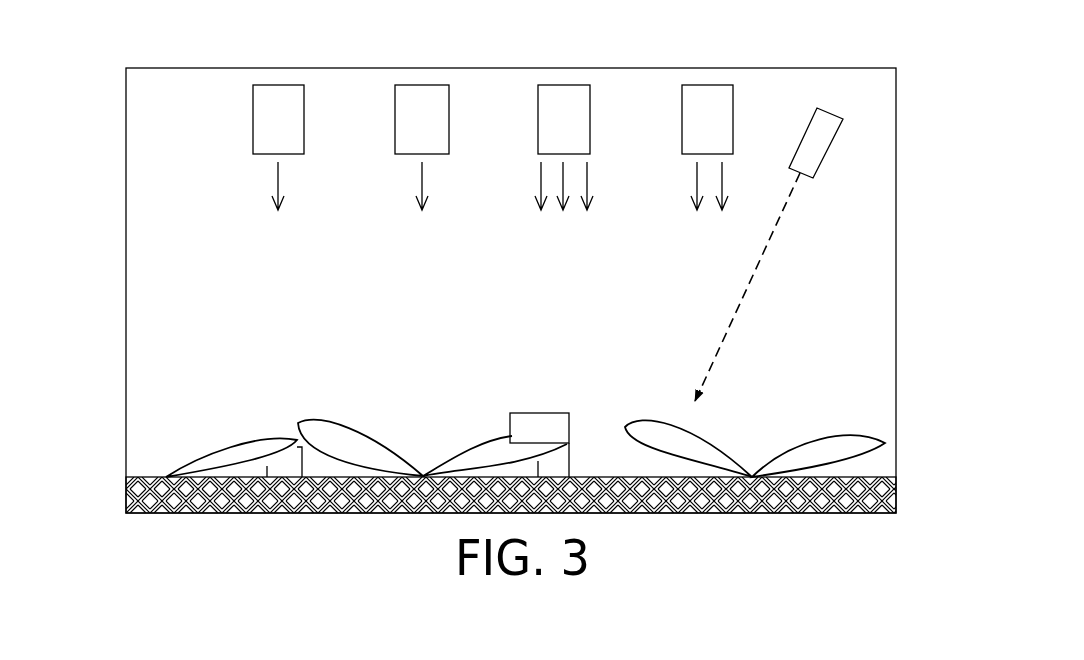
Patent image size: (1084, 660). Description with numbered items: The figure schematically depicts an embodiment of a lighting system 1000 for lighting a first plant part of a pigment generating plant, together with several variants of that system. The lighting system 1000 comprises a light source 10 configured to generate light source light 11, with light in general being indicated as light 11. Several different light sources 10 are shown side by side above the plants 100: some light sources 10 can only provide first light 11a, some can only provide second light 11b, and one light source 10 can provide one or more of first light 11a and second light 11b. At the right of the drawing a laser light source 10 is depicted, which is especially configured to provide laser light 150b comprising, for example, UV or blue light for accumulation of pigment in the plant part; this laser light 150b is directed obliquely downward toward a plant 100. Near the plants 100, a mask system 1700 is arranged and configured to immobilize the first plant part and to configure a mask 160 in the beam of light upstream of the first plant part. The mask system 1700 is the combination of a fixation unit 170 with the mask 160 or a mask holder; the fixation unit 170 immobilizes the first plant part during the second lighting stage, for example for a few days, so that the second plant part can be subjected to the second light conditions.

The lighting system 1000 is at (188, 148).
The light source 10 is at (384, 117).
The light source light 11 is at (540, 178).
The first light 11a is at (421, 175).
The second light 11b is at (276, 180).
The laser light 150b is at (714, 356).
The plant 100 is at (223, 433).
The mask 160 is at (556, 403).
The fixation unit 170 is at (309, 470).
The mask system 1700 is at (594, 437).